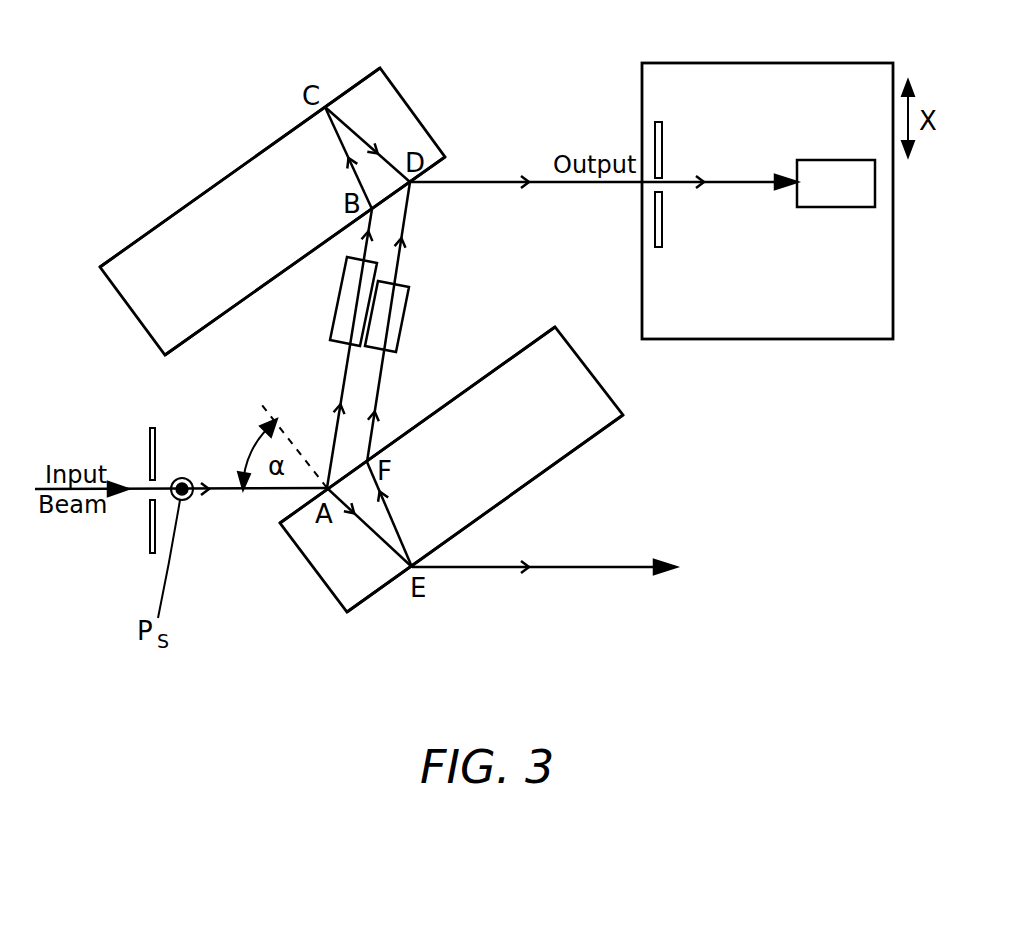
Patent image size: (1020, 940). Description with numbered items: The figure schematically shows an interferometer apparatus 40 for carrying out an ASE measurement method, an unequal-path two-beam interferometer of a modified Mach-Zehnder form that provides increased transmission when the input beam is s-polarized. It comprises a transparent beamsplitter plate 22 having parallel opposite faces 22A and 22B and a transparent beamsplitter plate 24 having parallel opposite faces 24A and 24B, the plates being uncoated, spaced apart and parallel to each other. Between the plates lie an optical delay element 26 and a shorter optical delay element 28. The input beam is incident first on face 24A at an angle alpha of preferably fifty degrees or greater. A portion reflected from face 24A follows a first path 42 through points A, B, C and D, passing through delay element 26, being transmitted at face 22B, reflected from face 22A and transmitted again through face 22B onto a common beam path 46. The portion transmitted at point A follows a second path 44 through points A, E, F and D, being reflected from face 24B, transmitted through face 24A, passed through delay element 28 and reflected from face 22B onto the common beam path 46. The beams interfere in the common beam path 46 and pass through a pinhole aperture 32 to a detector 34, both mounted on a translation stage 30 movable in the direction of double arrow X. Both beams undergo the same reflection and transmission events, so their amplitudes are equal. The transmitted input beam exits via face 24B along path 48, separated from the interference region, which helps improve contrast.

The transparent beamsplitter plate 22 is at (120, 313).
The face of beamsplitter plate 22 22A is at (183, 207).
The face of beamsplitter plate 22 22B is at (250, 298).
The transparent beamsplitter plate 24 is at (295, 586).
The face of beamsplitter plate 24 24A is at (297, 503).
The face of beamsplitter plate 24 24B is at (497, 507).
The optical delay element 26 is at (372, 273).
The optical delay element 28 is at (403, 308).
The translation stage 30 is at (741, 350).
The pinhole aperture 32 is at (662, 133).
The detector 34 is at (148, 522).
The interferometer apparatus 40 is at (818, 553).
The first path 42 is at (344, 370).
The second path 44 is at (377, 382).
The common beam path 46 is at (500, 182).
The path of transmitted input beam 48 is at (553, 567).